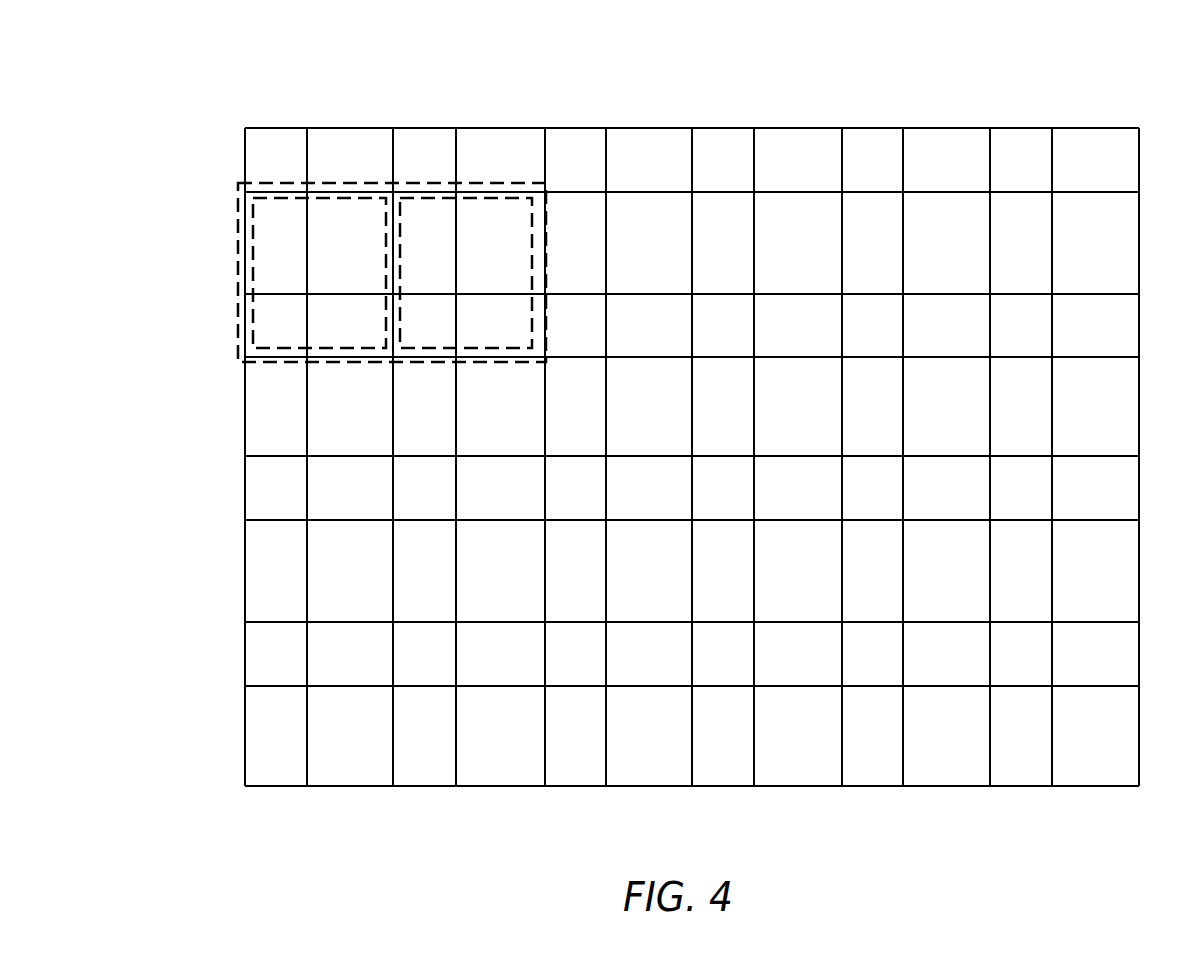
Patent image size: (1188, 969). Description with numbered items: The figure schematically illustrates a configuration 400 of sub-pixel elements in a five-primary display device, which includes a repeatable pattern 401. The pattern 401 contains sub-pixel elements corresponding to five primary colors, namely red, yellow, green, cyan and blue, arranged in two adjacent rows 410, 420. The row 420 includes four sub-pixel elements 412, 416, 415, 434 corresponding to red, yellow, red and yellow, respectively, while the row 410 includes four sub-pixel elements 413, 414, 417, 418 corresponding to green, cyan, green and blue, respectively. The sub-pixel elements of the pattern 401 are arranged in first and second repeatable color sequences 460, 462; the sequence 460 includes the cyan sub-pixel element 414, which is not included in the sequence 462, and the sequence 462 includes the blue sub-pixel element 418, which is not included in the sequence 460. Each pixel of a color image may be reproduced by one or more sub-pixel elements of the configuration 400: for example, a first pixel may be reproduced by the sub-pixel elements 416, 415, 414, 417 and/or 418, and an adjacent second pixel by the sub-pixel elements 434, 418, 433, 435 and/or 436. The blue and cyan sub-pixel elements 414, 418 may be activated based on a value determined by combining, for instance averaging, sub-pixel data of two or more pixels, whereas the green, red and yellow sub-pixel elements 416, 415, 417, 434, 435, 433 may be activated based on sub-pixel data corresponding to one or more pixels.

The configuration of sub-pixel elements 400 is at (285, 807).
The repeatable pattern 401 is at (273, 365).
The row 410 is at (222, 242).
The row 420 is at (222, 323).
The sub-pixel element 412 is at (260, 345).
The first repeatable color sequence 460 is at (252, 225).
The second repeatable color sequence 462 is at (533, 245).
The sub-pixel element 413 is at (290, 222).
The sub-pixel element 414 is at (363, 222).
The sub-pixel element 417 is at (437, 223).
The sub-pixel element 418 is at (522, 223).
The sub-pixel element 415 is at (407, 345).
The sub-pixel element 416 is at (335, 345).
The sub-pixel element 433 is at (588, 313).
The sub-pixel element 434 is at (473, 310).
The sub-pixel element 435 is at (588, 222).
The sub-pixel element 436 is at (673, 220).